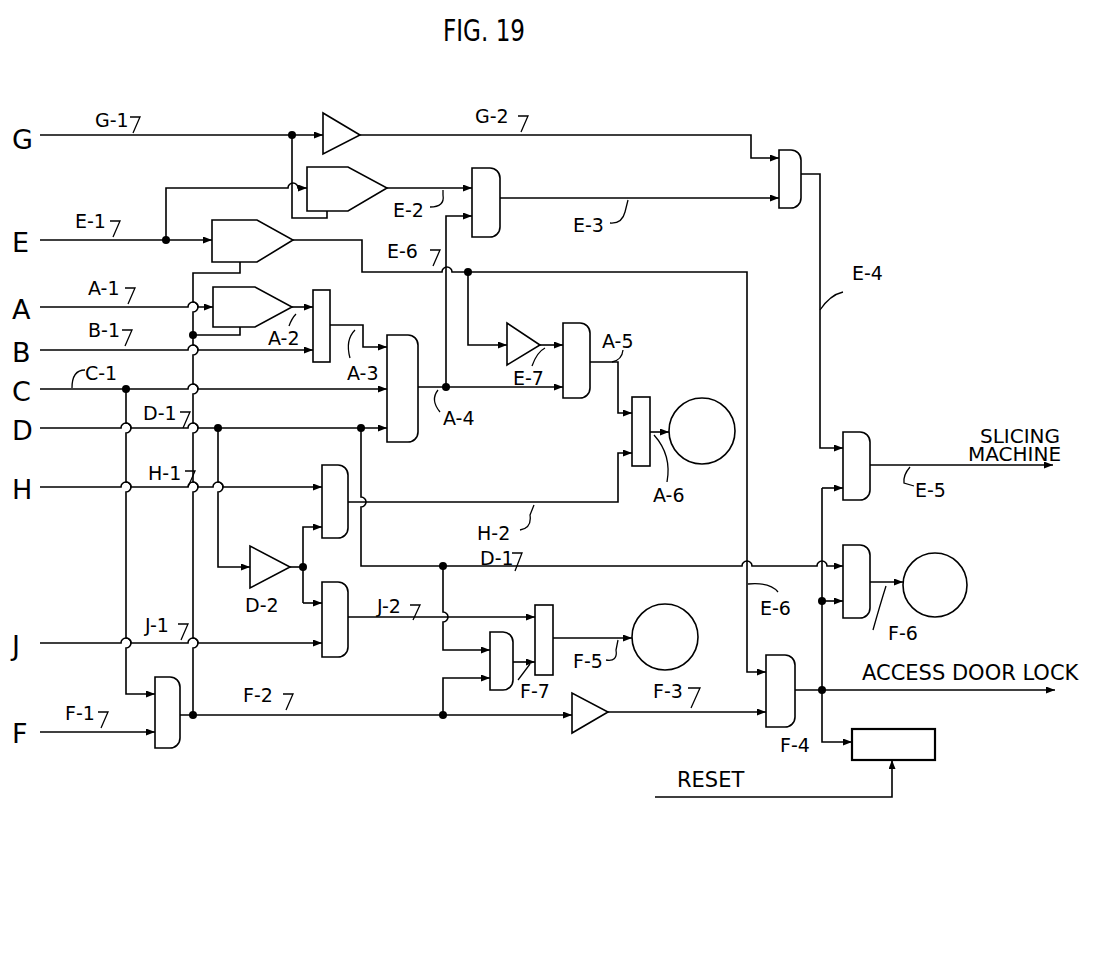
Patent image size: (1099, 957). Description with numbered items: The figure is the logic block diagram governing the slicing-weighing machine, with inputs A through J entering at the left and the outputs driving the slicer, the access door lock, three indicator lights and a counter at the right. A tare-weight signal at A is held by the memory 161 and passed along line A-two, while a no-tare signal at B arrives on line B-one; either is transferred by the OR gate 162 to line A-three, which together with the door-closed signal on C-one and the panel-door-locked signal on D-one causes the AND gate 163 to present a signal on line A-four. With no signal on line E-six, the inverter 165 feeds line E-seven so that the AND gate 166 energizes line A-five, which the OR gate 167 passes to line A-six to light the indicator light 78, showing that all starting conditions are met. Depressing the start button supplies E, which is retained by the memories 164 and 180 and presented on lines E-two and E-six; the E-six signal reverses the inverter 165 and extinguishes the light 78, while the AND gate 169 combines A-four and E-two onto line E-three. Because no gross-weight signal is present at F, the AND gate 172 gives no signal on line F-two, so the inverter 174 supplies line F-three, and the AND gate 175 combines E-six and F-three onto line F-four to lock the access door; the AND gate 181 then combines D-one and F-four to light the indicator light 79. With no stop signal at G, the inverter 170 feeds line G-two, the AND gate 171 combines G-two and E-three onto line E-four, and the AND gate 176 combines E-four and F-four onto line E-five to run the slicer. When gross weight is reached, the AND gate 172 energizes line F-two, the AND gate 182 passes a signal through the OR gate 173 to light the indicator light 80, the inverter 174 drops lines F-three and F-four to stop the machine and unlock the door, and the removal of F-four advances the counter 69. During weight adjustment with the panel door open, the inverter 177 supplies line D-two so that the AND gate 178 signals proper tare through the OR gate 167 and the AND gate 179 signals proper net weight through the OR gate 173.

The inverter 170 is at (347, 113).
The memory 164 is at (373, 177).
The AND gate 169 is at (500, 187).
The AND gate 171 is at (800, 153).
The memory 180 is at (234, 220).
The memory 161 is at (265, 297).
The OR gate 162 is at (330, 312).
The AND gate 163 is at (402, 343).
The inverter 165 is at (520, 335).
The AND gate 166 is at (575, 324).
The OR gate 167 is at (640, 396).
The indicator light 78 is at (708, 398).
The AND gate 176 is at (868, 434).
The AND gate 178 is at (325, 469).
The inverter 177 is at (262, 548).
The AND gate 179 is at (330, 590).
The AND gate 172 is at (178, 678).
The AND gate 182 is at (488, 632).
The OR gate 173 is at (553, 632).
The indicator light 80 is at (700, 612).
The inverter 174 is at (588, 725).
The AND gate 175 is at (785, 656).
The AND gate 181 is at (858, 618).
The indicator light 79 is at (950, 612).
The counter 69 is at (935, 748).